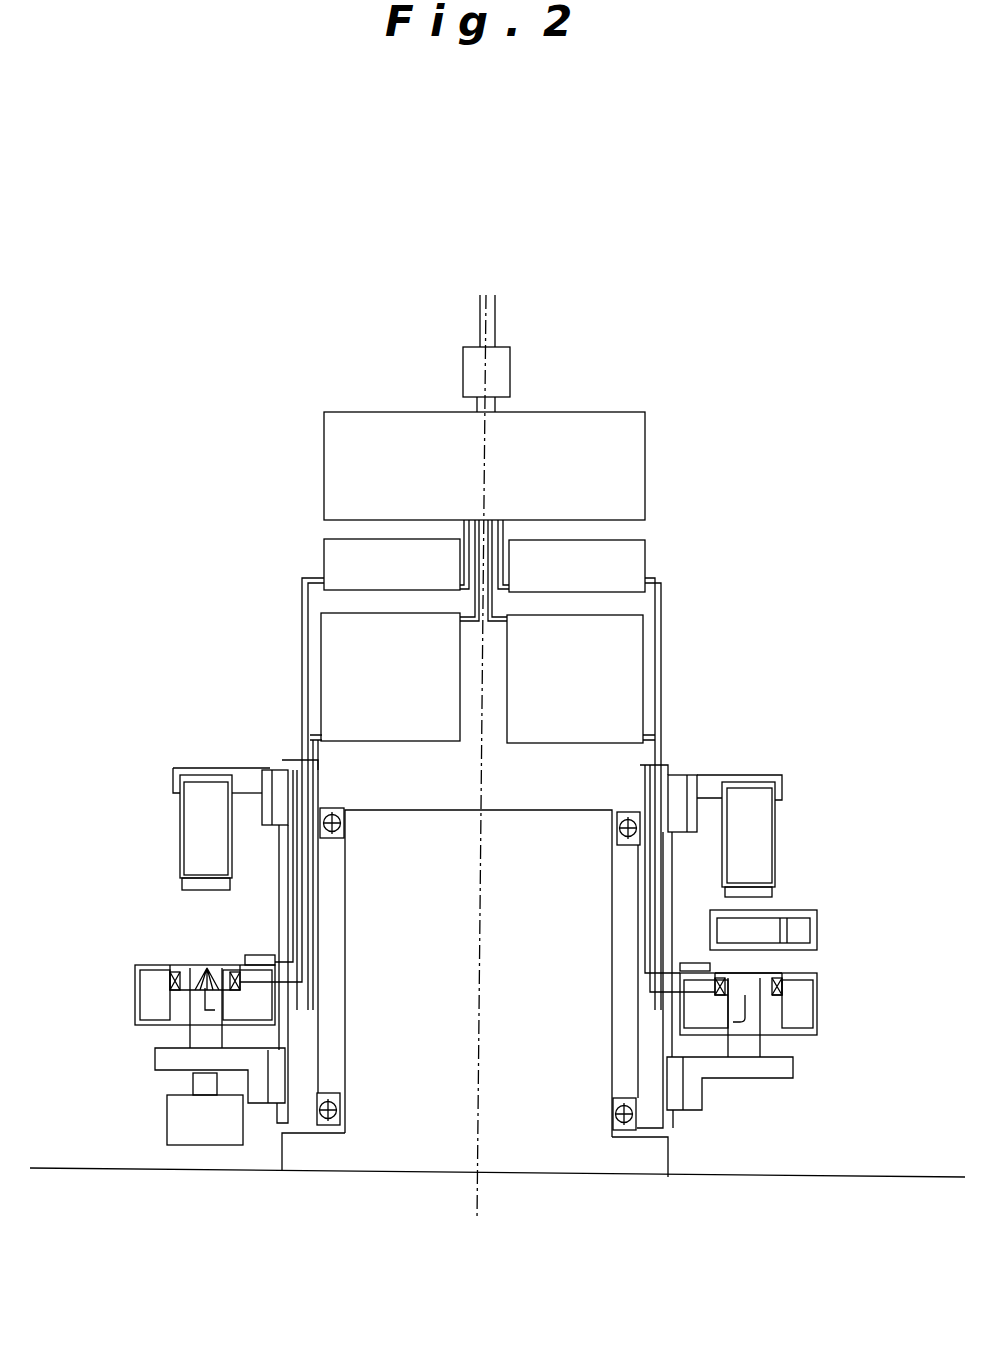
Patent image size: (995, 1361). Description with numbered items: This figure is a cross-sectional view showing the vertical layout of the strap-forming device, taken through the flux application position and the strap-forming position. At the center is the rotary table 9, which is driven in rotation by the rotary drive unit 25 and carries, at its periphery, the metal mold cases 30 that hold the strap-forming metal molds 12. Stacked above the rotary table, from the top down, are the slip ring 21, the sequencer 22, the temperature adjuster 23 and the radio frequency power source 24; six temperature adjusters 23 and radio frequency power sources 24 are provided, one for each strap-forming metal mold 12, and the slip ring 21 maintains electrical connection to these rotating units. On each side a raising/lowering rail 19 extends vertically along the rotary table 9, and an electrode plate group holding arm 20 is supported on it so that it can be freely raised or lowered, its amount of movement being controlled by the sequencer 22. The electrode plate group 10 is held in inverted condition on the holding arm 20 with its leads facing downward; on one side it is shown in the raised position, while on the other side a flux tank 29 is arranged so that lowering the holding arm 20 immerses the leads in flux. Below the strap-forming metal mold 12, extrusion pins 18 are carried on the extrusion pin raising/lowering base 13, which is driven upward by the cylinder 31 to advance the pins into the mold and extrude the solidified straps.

The rotary table 9 is at (648, 1125).
The electrode plate group 10 is at (202, 835).
The strap-forming metal mold 12 is at (197, 962).
The extrusion pin raising/lowering base 13 is at (163, 1060).
The extrusion pins 18 is at (190, 1040).
The raising/lowering rail 19 is at (672, 765).
The electrode plate group holding arm 20 is at (717, 773).
The slip ring 21 is at (500, 362).
The sequencer 22 is at (612, 428).
The temperature adjuster 23 is at (632, 557).
The radio frequency power source 24 is at (623, 648).
The rotary drive unit 25 is at (568, 1147).
The flux tank 29 is at (818, 925).
The metal mold case 30 is at (818, 1008).
The cylinder 31 is at (175, 1118).